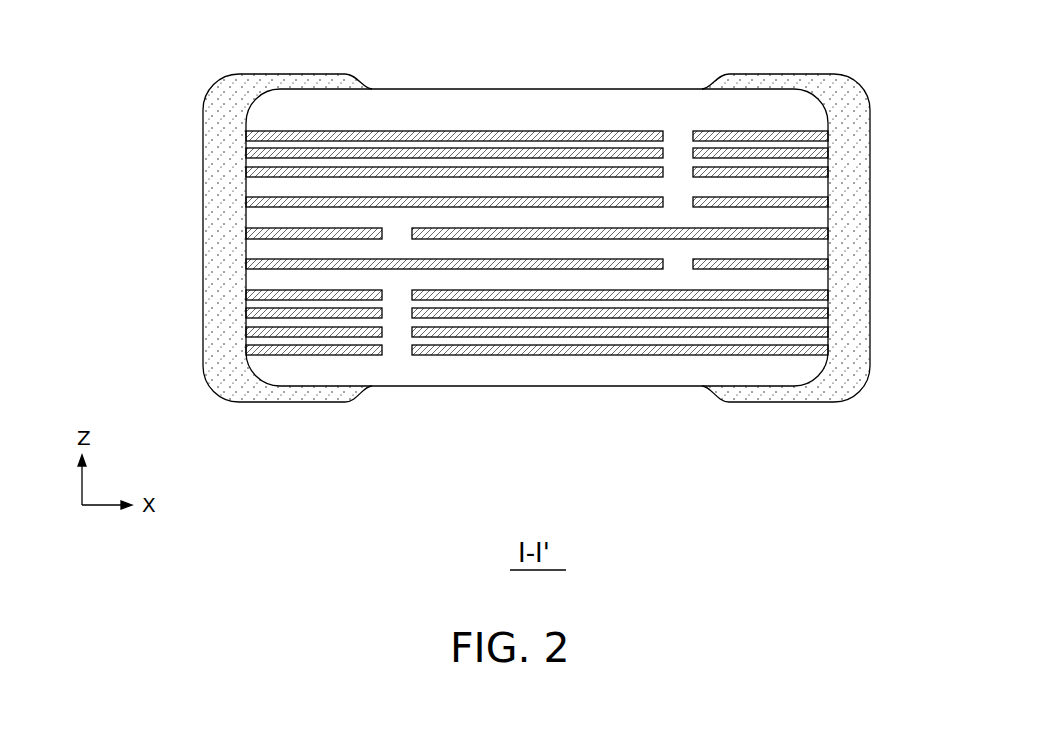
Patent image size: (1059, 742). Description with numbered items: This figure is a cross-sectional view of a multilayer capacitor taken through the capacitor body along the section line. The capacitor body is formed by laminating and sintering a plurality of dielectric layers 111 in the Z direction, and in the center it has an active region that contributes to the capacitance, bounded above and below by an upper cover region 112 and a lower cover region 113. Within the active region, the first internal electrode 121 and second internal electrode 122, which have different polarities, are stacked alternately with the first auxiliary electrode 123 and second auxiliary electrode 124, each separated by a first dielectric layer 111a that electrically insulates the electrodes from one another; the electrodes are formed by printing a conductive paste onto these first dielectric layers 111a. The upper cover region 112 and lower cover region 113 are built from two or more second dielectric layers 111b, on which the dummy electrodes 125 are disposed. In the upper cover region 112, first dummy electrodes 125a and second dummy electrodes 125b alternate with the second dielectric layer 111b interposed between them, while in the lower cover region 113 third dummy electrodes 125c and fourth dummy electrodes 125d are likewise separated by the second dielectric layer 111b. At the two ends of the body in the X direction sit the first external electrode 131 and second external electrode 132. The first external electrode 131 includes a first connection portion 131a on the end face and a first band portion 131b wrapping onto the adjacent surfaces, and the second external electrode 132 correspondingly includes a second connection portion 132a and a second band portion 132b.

The dielectric layers 111 is at (376, 497).
The first dielectric layer 111a is at (265, 213).
The second dielectric layer 111b is at (812, 145).
The upper cover region 112 is at (511, 106).
The lower cover region 113 is at (510, 370).
The first internal electrode 121 is at (400, 268).
The second internal electrode 122 is at (683, 230).
The first auxiliary electrode 123 is at (742, 264).
The second auxiliary electrode 124 is at (318, 232).
The dummy electrode 125 is at (708, 472).
The first dummy electrode 125a is at (424, 133).
The second dummy electrode 125b is at (768, 133).
The third dummy electrode 125c is at (333, 356).
The fourth dummy electrode 125d is at (580, 356).
The first external electrode 131 is at (257, 284).
The first connection portion 131a is at (212, 320).
The first band portion 131b is at (287, 265).
The second external electrode 132 is at (817, 285).
The second connection portion 132a is at (866, 320).
The second band portion 132b is at (786, 265).